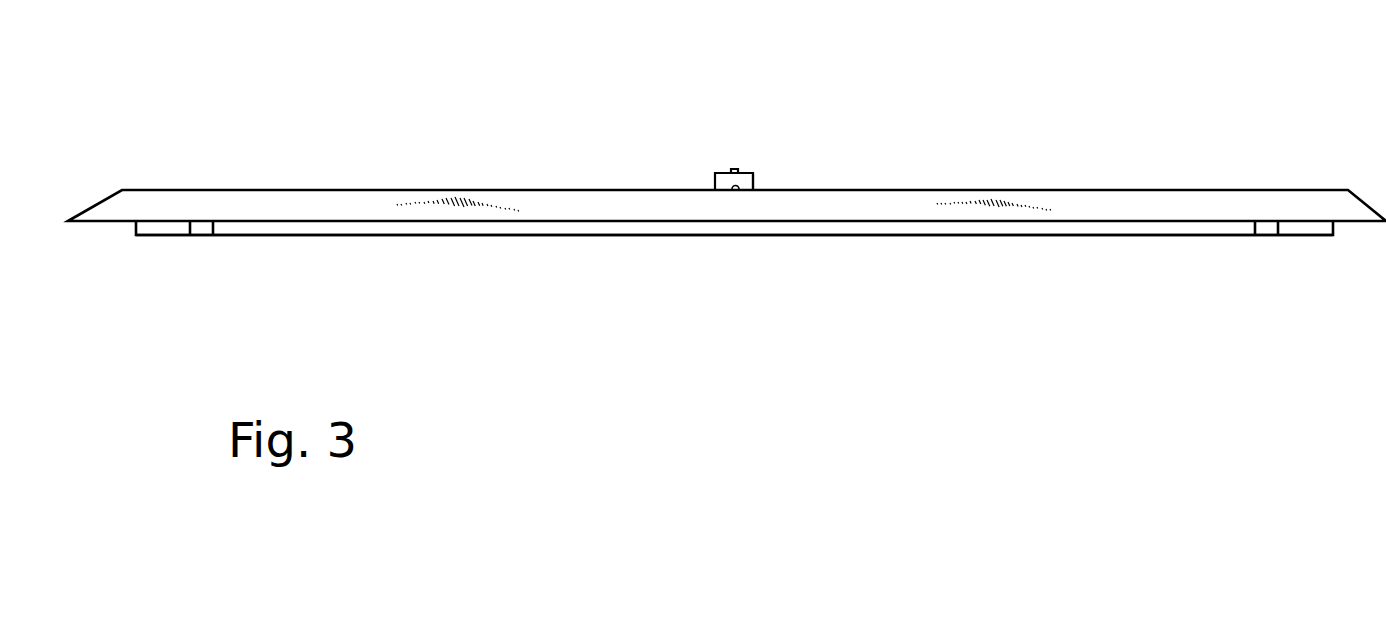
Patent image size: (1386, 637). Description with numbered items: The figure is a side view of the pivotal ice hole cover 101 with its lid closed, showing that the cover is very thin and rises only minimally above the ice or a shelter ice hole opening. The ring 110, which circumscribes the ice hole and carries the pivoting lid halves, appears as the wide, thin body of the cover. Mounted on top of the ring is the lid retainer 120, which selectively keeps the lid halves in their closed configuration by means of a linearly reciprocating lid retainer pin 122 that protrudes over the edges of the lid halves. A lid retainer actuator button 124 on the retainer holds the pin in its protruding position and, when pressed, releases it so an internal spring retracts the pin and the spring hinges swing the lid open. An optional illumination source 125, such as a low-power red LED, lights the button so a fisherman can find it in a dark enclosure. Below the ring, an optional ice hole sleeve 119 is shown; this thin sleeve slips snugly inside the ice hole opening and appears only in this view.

The pivotal ice hole cover 101 is at (408, 103).
The ring 110 is at (1097, 208).
The ice hole sleeve 119 is at (685, 227).
The lid retainer 120 is at (744, 158).
The lid retainer pin 122 is at (741, 185).
The lid retainer actuator button 124 is at (758, 170).
The illumination source 125 is at (733, 169).